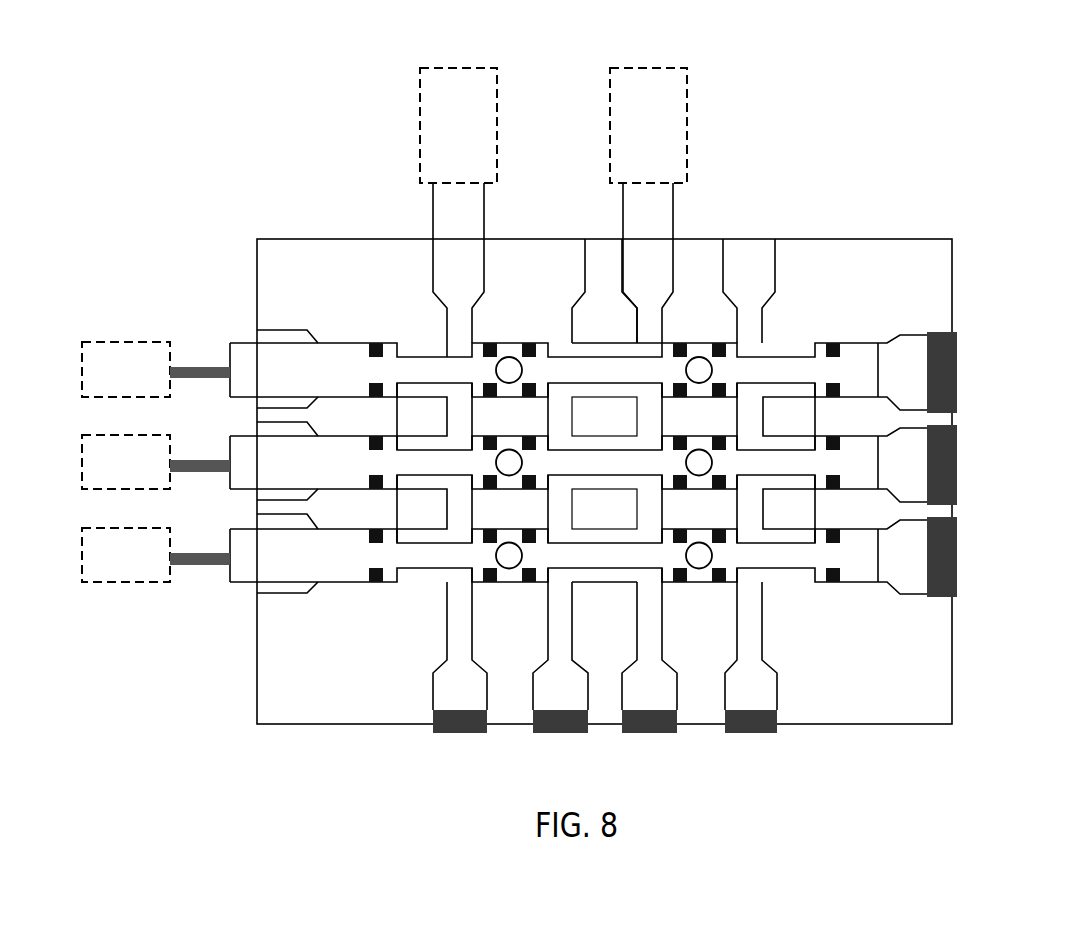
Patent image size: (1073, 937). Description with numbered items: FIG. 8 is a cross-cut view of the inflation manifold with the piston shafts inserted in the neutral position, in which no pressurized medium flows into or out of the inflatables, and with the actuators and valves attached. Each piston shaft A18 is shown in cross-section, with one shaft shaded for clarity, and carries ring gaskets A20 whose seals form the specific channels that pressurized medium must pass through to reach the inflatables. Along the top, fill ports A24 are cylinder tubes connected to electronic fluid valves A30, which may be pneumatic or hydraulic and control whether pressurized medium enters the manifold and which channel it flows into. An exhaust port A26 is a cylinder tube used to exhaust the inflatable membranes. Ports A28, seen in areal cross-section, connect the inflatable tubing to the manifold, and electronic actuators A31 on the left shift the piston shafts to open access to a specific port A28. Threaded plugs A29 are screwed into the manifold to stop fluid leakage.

The piston shaft A18 is at (247, 362).
The ring gasket A20 is at (376, 345).
The fill port A24 is at (470, 215).
The exhaust port A26 is at (747, 260).
The port connecting inflatable tubing to the manifold A28 is at (510, 367).
The threaded plug A29 is at (957, 345).
The electronic fluid valve A30 is at (470, 103).
The electronic actuator A31 is at (122, 358).